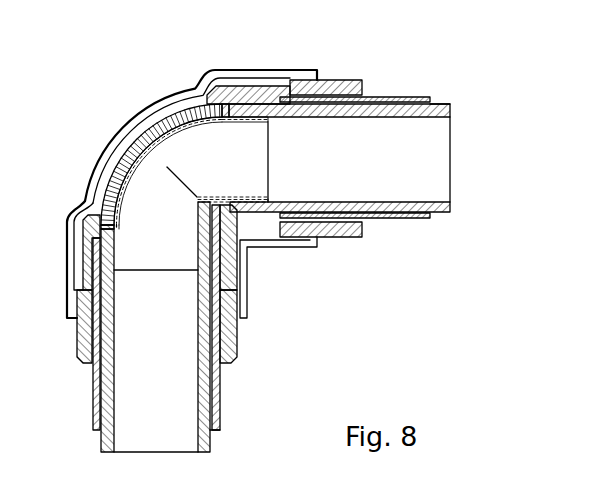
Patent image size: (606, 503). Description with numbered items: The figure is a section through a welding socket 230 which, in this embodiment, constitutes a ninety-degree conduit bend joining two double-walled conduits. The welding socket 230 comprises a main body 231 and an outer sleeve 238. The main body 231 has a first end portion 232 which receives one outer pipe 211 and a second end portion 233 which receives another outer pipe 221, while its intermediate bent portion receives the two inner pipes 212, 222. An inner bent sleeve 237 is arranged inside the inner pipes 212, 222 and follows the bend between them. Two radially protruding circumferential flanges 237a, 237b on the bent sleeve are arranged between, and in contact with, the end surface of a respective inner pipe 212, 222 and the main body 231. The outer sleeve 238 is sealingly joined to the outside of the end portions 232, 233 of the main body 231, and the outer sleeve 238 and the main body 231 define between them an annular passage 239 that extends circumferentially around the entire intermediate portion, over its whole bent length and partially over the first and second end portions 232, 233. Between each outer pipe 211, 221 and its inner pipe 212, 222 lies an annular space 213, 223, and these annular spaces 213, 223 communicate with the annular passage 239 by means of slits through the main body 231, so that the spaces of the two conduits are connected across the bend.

The outer pipe 211 is at (92, 412).
The inner pipe 212 is at (198, 326).
The annular space 213 is at (212, 430).
The outer pipe 221 is at (391, 97).
The inner pipe 222 is at (386, 202).
The annular space 223 is at (430, 103).
The welding socket 230 is at (65, 272).
The main body 231 is at (75, 333).
The first end portion 232 is at (77, 352).
The second end portion 233 is at (334, 80).
The inner bent sleeve 237 is at (125, 180).
The radially protruding circumferential flange 237a is at (118, 229).
The radially protruding circumferential flange 237b is at (229, 123).
The outer sleeve 238 is at (102, 145).
The annular passage 239 is at (130, 132).